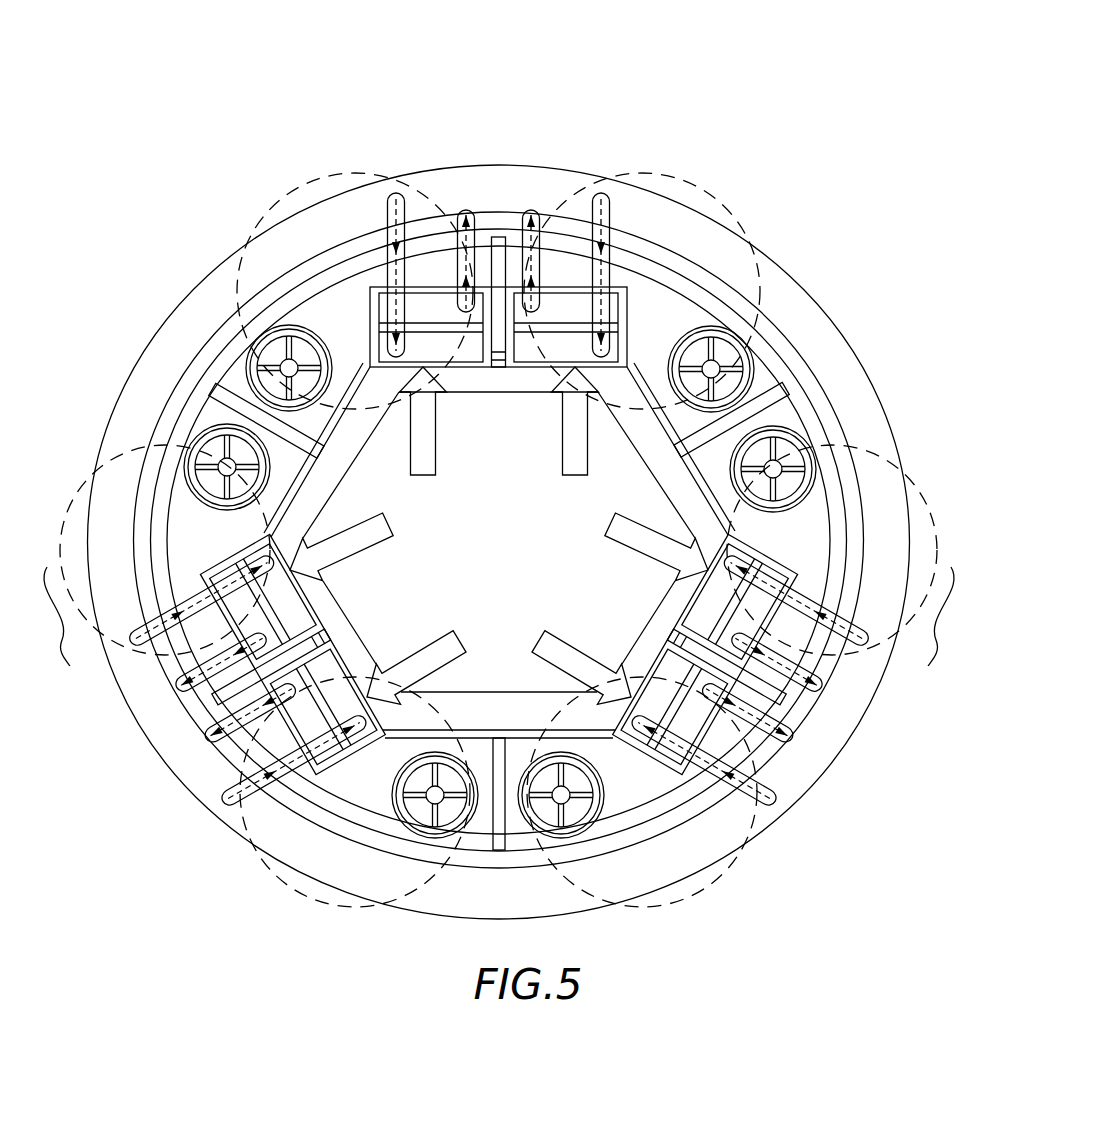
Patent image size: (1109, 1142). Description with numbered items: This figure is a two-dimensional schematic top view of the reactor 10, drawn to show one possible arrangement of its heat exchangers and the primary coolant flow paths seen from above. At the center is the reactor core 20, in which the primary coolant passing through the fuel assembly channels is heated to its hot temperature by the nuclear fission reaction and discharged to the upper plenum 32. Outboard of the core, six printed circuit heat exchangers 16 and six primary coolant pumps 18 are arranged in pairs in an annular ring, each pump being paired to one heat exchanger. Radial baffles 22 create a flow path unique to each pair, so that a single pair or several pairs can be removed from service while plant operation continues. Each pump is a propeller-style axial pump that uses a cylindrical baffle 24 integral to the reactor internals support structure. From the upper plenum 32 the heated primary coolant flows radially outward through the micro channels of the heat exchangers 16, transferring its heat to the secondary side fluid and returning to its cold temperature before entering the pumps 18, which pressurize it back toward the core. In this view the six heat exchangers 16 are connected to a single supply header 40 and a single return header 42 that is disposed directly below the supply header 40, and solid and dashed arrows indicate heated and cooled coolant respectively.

The reactor 10 is at (712, 104).
The printed circuit heat exchanger 16 is at (450, 355).
The primary coolant pump 18 is at (303, 357).
The reactor core 20 is at (490, 537).
The radial baffle 22 is at (500, 240).
The cylindrical baffle 24 is at (328, 418).
The upper plenum 32 is at (712, 528).
The supply header 40 is at (810, 765).
The return header 42 is at (857, 733).